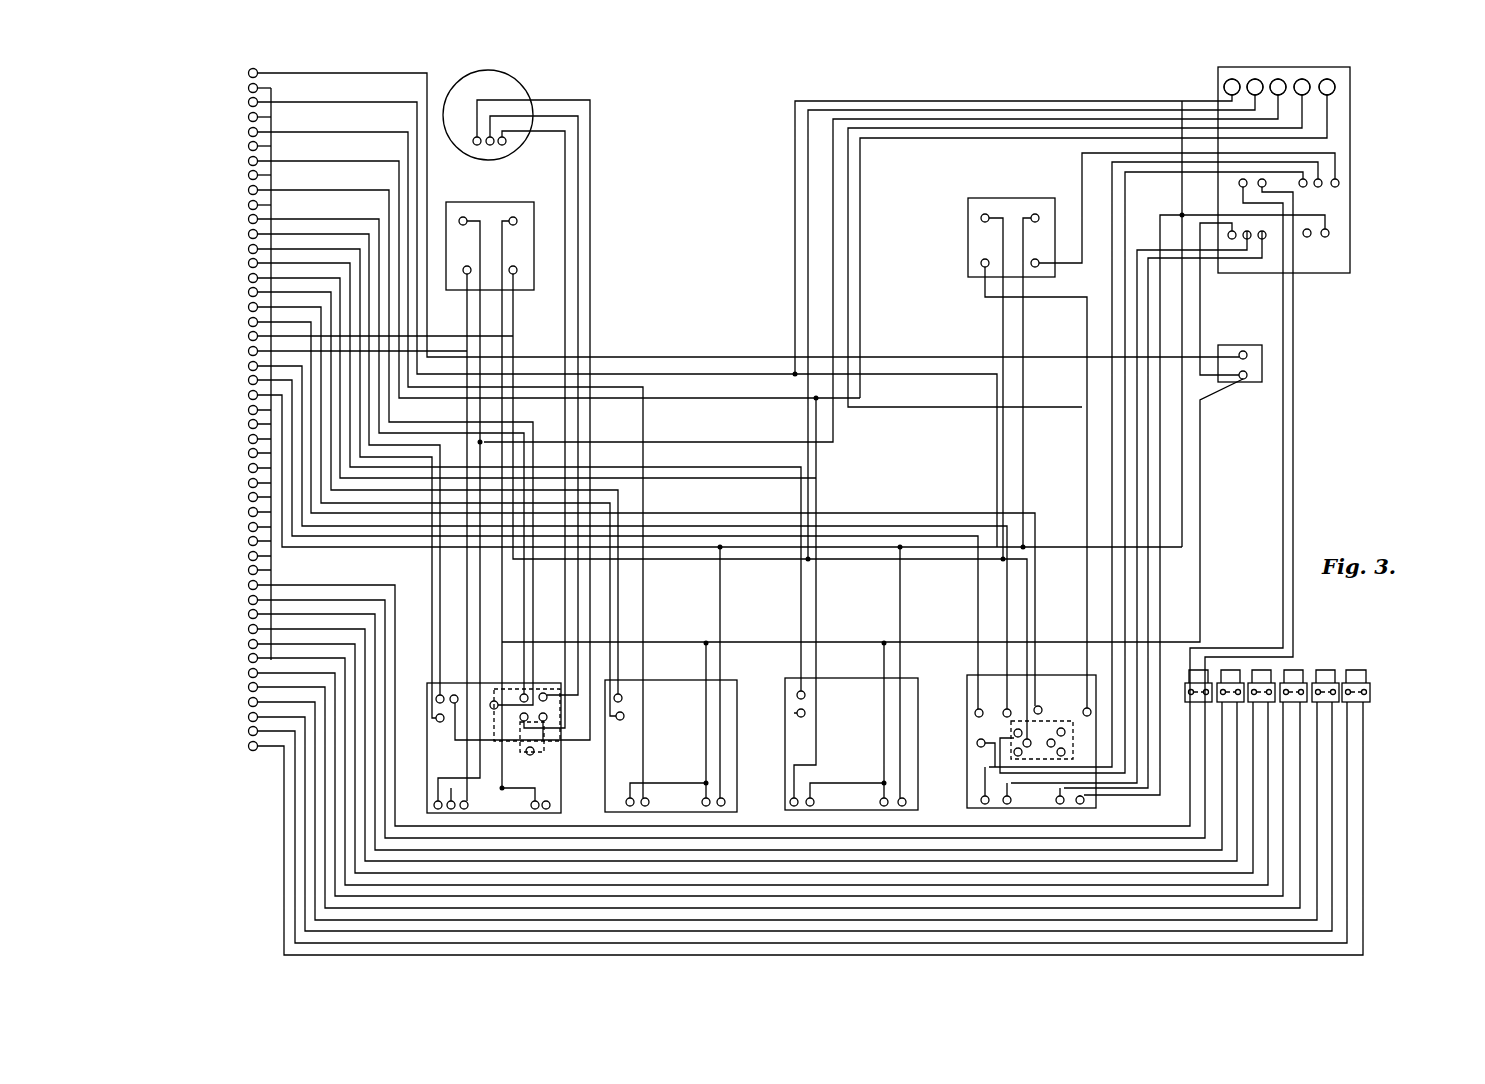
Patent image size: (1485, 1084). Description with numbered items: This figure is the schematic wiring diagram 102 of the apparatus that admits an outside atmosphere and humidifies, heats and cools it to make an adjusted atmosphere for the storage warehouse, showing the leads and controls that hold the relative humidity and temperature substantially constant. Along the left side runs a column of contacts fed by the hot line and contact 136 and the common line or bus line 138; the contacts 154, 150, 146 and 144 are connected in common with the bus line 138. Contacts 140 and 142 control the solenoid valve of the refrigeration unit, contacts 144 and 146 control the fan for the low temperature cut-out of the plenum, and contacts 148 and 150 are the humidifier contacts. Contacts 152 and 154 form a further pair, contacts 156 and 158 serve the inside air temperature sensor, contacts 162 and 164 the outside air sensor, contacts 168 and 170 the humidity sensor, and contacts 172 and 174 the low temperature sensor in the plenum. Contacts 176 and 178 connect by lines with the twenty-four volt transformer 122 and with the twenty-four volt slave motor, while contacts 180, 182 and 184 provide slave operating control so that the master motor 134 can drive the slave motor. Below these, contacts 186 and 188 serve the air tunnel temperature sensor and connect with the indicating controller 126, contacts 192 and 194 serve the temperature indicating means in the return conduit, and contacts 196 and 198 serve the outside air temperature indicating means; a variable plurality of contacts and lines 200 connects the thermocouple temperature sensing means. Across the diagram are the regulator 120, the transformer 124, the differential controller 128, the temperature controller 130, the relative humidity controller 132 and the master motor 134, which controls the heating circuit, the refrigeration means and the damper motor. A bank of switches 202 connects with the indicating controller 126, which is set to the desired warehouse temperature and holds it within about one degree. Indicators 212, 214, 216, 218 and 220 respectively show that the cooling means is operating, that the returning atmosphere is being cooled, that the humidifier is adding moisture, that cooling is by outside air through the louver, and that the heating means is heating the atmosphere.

The schematic wiring diagram 102 is at (697, 65).
The regulator 120 is at (505, 84).
The 24-volt transformer 122 is at (497, 204).
The transformer 124 is at (1002, 198).
The indicating controller 126 is at (1341, 273).
The differential controller 128 is at (432, 738).
The temperature controller 130 is at (670, 684).
The relative humidity controller 132 is at (846, 684).
The master motor 134 is at (970, 694).
The hot line and contact 136 is at (291, 76).
The common line or bus line 138 is at (274, 90).
The contact 140 is at (249, 101).
The contact 142 is at (249, 117).
The contact 144 is at (249, 131).
The contact 146 is at (249, 146).
The humidifier contact 148 is at (249, 161).
The humidifier contact 150 is at (249, 175).
The contact 152 is at (249, 190).
The contact 154 is at (249, 205).
The contact 156 is at (249, 219).
The contact 158 is at (249, 234).
The contact 162 is at (249, 249).
The contact 164 is at (249, 263).
The contact 168 is at (249, 278).
The contact 170 is at (249, 292).
The contact 172 is at (249, 307).
The contact 174 is at (249, 322).
The contact 176 is at (249, 336).
The contact 178 is at (249, 351).
The contact 180 is at (249, 366).
The contact 182 is at (249, 380).
The contact 184 is at (249, 395).
The contact 186 is at (249, 585).
The contact 188 is at (249, 600).
The contact 192 is at (249, 614).
The contact 194 is at (249, 629).
The contact 196 is at (249, 644).
The contact 198 is at (249, 658).
The contacts and lines 200 is at (250, 673).
The bank of switches 202 is at (1375, 680).
The indicator 212 is at (1216, 80).
The indicator 214 is at (1252, 78).
The humidifying indicator 216 is at (1298, 78).
The indicator 218 is at (1336, 78).
The indicator 220 is at (1336, 86).